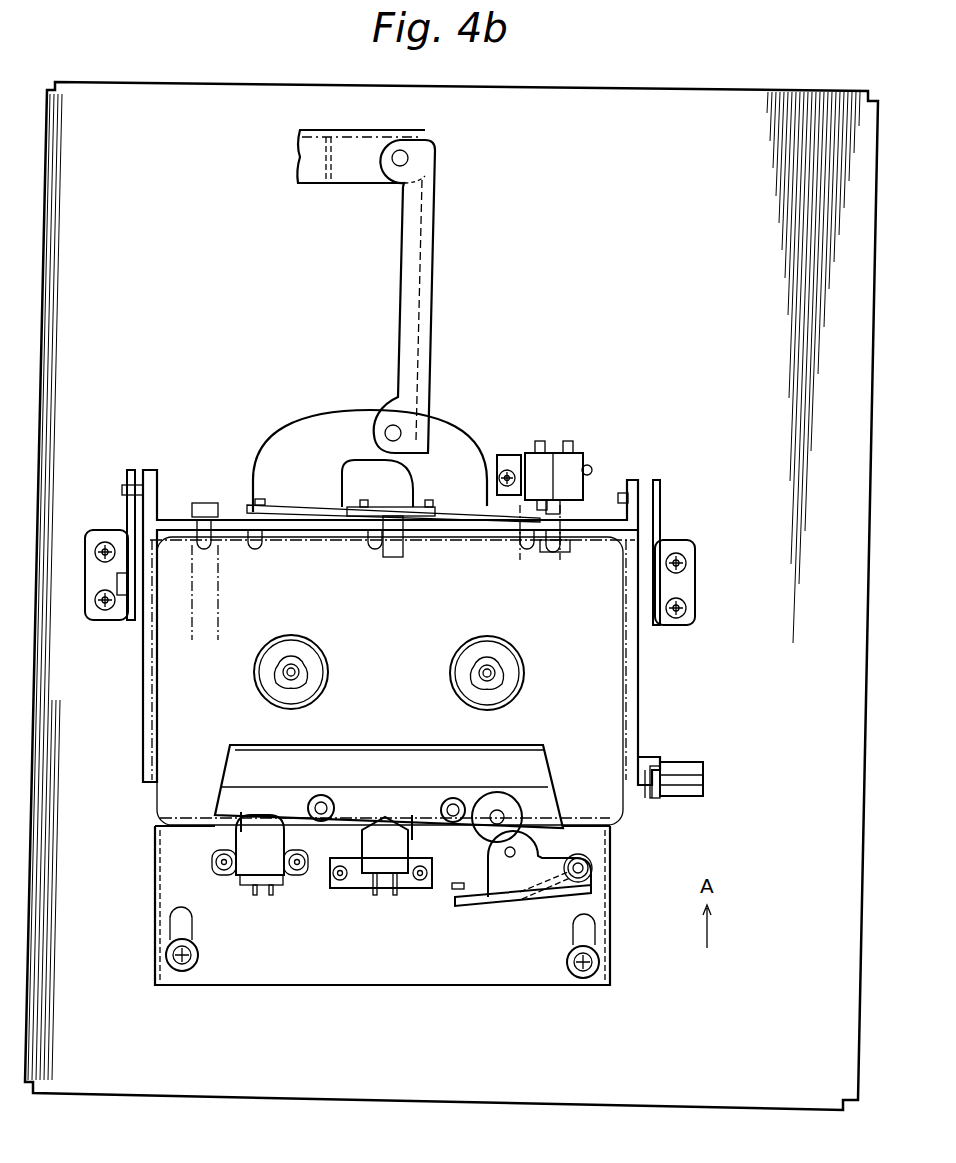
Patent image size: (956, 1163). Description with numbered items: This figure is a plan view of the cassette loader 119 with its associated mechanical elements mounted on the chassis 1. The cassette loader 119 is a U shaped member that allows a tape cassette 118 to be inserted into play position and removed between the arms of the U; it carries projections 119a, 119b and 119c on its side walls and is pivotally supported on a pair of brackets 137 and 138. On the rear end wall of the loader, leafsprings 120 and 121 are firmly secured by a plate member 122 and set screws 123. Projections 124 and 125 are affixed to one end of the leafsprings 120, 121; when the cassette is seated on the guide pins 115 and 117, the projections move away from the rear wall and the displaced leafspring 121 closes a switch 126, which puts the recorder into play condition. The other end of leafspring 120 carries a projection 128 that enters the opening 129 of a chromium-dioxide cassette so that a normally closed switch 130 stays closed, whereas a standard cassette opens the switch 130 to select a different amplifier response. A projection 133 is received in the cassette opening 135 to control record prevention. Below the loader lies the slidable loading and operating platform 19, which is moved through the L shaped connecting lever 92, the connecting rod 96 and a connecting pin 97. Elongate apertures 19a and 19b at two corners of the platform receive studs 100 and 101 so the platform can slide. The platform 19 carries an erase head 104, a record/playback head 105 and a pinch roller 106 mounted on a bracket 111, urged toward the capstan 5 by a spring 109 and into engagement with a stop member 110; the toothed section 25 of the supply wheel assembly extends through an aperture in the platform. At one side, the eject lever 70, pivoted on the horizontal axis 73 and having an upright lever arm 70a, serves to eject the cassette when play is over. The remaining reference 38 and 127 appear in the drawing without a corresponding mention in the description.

The chassis 1 is at (690, 95).
The L shaped connecting lever 92 is at (341, 180).
The connecting rod 96 is at (424, 307).
The connecting pin 97 is at (385, 434).
The leafspring 121 is at (470, 510).
The plate member 122 is at (383, 506).
The leafspring 120 is at (293, 498).
The cassette loader 119 is at (640, 678).
The tape cassette 118 is at (630, 716).
The projection 119c is at (650, 760).
The bracket 138 is at (126, 518).
The projection 119b is at (102, 600).
The bracket 137 is at (660, 522).
The rear end wall 119a is at (695, 590).
The projection 133 is at (210, 552).
The opening 135 is at (200, 556).
The projection 124 is at (258, 548).
The set screws 123 is at (376, 548).
The projection 125 is at (527, 548).
The guide pin 127 is at (552, 552).
The projection 128 is at (565, 556).
The opening 129 is at (568, 552).
The normally closed switch 130 is at (578, 453).
The switch 126 is at (528, 453).
The toothed section of the supply wheel assembly 25 is at (275, 672).
The reel spindle 38 is at (503, 672).
The horizontal axis 73 is at (703, 778).
The eject lever 70 is at (704, 794).
The upright lever arm 70a is at (655, 790).
The loading and operating platform 19 is at (485, 986).
The elongate aperture 19a is at (172, 927).
The elongate aperture 19b is at (594, 930).
The stud 100 is at (167, 956).
The stud 101 is at (600, 963).
The guide pin 115 is at (334, 808).
The guide pin 117 is at (454, 798).
The capstan 5 is at (499, 810).
The pinch roller 106 is at (486, 861).
The bracket 111 is at (500, 905).
The stop member 110 is at (453, 887).
The spring 109 is at (545, 893).
The erase head 104 is at (280, 880).
The record/playback head 105 is at (385, 896).